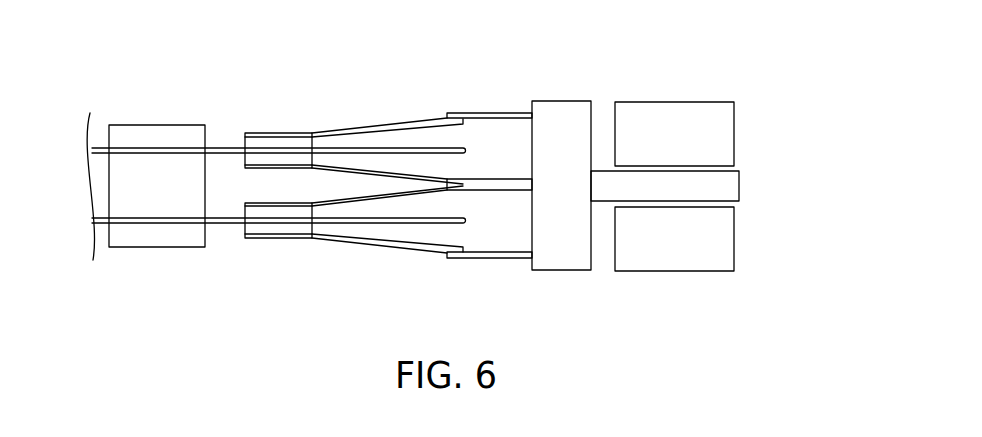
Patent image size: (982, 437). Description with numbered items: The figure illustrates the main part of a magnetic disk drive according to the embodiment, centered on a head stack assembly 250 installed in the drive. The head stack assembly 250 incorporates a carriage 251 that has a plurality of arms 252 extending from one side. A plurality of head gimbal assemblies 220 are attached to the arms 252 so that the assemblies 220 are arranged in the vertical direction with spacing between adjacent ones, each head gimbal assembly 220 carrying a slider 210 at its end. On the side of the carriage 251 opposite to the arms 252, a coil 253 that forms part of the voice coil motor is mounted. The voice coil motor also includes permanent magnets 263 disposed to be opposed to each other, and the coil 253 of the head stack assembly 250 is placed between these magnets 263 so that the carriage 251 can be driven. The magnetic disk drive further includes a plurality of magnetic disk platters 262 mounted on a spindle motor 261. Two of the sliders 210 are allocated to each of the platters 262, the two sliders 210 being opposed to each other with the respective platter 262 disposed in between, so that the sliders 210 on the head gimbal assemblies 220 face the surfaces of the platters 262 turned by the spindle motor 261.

The slider 210 is at (240, 134).
The head gimbal assembly 220 is at (372, 127).
The head stack assembly 250 is at (563, 96).
The carriage 251 is at (543, 99).
The arm 252 is at (465, 112).
The coil 253 is at (728, 187).
The spindle motor 261 is at (135, 130).
The magnetic disk platter 262 is at (217, 146).
The permanent magnet 263 is at (668, 102).